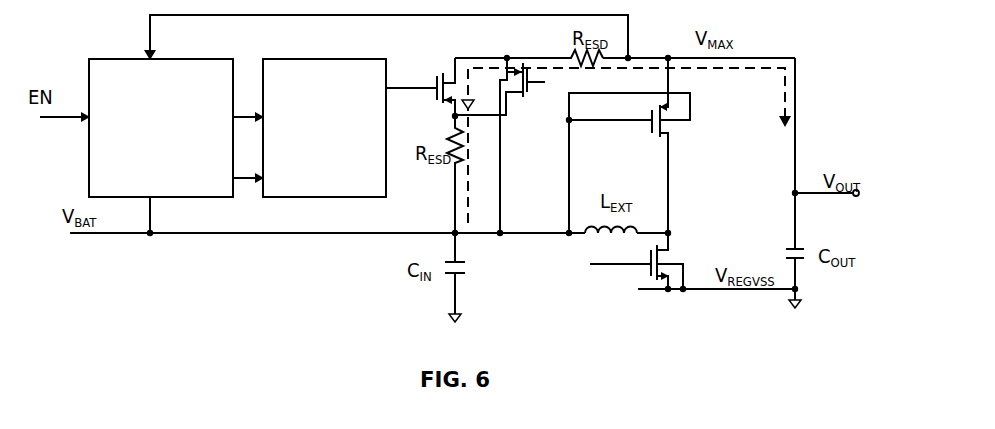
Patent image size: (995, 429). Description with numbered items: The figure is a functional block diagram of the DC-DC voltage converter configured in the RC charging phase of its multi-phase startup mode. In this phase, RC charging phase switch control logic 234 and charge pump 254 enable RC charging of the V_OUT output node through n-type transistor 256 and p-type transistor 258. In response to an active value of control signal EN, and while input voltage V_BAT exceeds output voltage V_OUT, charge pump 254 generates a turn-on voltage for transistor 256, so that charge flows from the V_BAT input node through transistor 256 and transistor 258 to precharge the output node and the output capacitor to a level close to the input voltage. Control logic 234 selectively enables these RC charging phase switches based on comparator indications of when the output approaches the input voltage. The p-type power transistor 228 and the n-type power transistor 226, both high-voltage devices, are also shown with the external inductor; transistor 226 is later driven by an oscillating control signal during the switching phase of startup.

The RC charging phase switch control logic 234 is at (179, 146).
The charge pump 254 is at (350, 128).
The n-type transistor 256 is at (436, 106).
The p-type transistor 258 is at (522, 99).
The transistor 228 is at (652, 132).
The transistor 226 is at (651, 276).